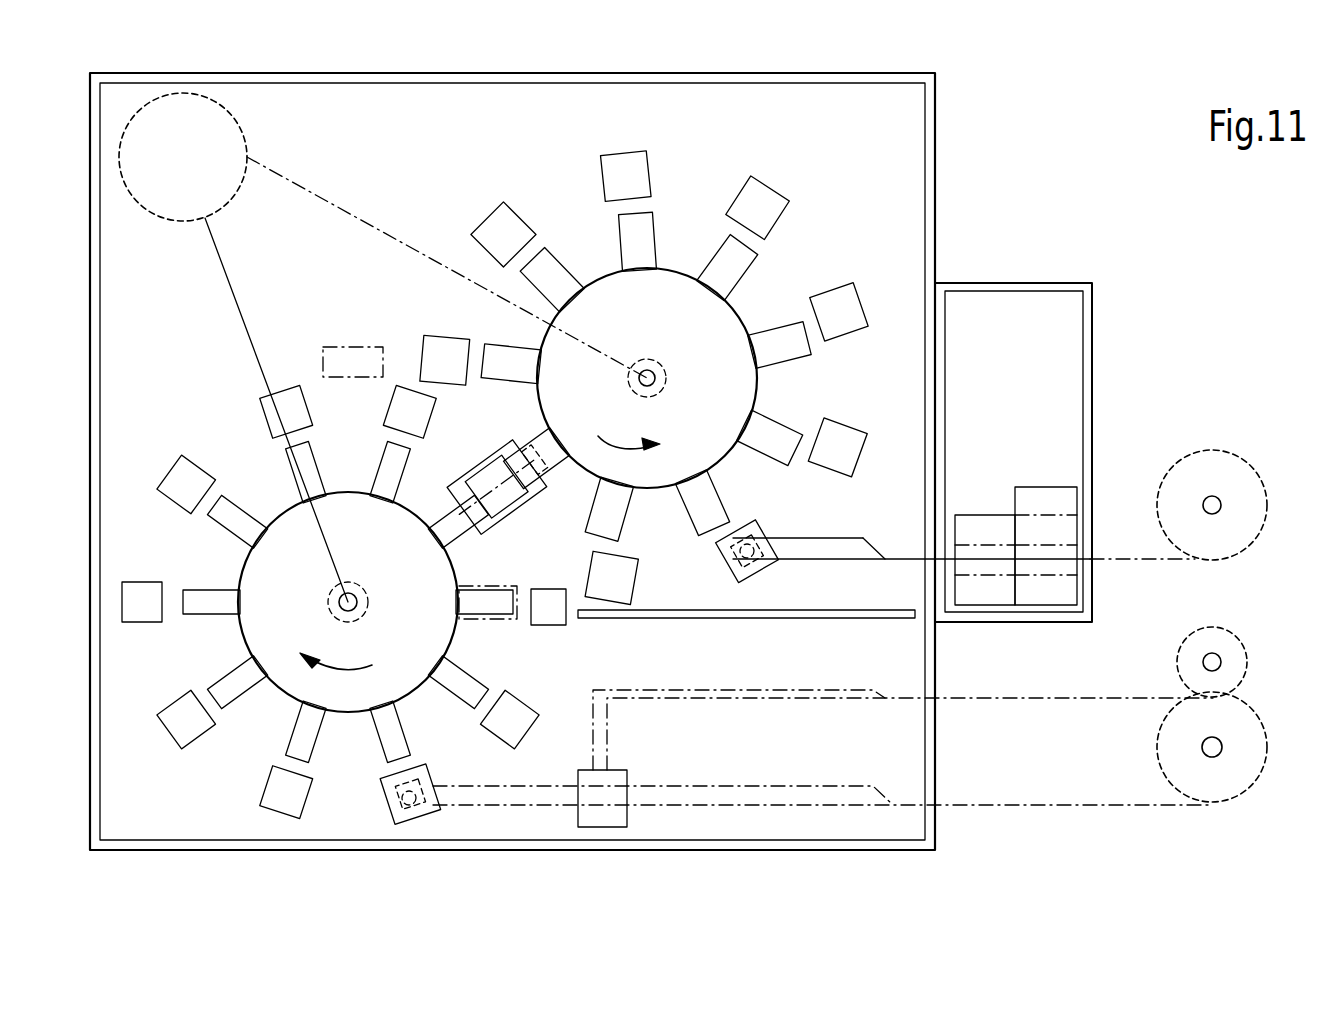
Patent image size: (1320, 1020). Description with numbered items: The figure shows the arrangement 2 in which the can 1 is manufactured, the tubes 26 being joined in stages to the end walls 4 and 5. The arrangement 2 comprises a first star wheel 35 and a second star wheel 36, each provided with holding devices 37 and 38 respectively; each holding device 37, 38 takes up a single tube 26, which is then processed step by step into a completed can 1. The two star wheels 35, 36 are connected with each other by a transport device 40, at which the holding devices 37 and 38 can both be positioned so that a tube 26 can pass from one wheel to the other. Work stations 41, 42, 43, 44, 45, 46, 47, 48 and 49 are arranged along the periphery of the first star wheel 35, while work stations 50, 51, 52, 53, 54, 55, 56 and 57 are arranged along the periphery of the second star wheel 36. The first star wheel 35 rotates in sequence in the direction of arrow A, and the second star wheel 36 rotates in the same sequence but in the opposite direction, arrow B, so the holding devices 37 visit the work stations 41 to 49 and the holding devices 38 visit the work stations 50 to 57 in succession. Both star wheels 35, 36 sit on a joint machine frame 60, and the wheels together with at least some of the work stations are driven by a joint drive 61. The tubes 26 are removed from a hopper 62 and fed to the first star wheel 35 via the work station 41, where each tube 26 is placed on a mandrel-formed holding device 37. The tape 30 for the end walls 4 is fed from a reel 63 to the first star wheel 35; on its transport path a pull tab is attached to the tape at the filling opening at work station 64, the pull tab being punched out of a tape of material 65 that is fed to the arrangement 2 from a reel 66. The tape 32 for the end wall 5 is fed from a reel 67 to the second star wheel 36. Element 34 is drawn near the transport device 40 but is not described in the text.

The can 1 is at (350, 355).
The arrangement 2 is at (968, 166).
The end wall 4 is at (395, 775).
The end wall 5 is at (755, 522).
The tube 26 is at (462, 622).
The tape 30 is at (752, 790).
The tape 32 is at (866, 548).
The transfer station 34 is at (532, 504).
The first star wheel 35 is at (262, 628).
The second star wheel 36 is at (733, 310).
The holding device 37 is at (236, 500).
The holding device 38 is at (650, 228).
The transport device 40 is at (480, 468).
The work station 41 is at (545, 615).
The work station 42 is at (518, 720).
The work station 43 is at (388, 795).
The work station 44 is at (280, 793).
The work station 45 is at (180, 738).
The work station 46 is at (142, 590).
The work station 47 is at (178, 473).
The work station 48 is at (289, 398).
The work station 49 is at (395, 418).
The work station 50 is at (625, 575).
The work station 51 is at (752, 568).
The work station 52 is at (848, 437).
The work station 53 is at (848, 292).
The work station 54 is at (782, 207).
The work station 55 is at (652, 160).
The work station 56 is at (515, 210).
The work station 57 is at (450, 354).
The machine frame 60 is at (467, 142).
The joint drive 61 is at (250, 130).
The hopper 62 is at (1088, 308).
The reel 63 is at (1170, 750).
The work station 64 is at (625, 775).
The tape of material 65 is at (748, 690).
The reel 66 is at (1178, 660).
The reel 67 is at (1222, 458).